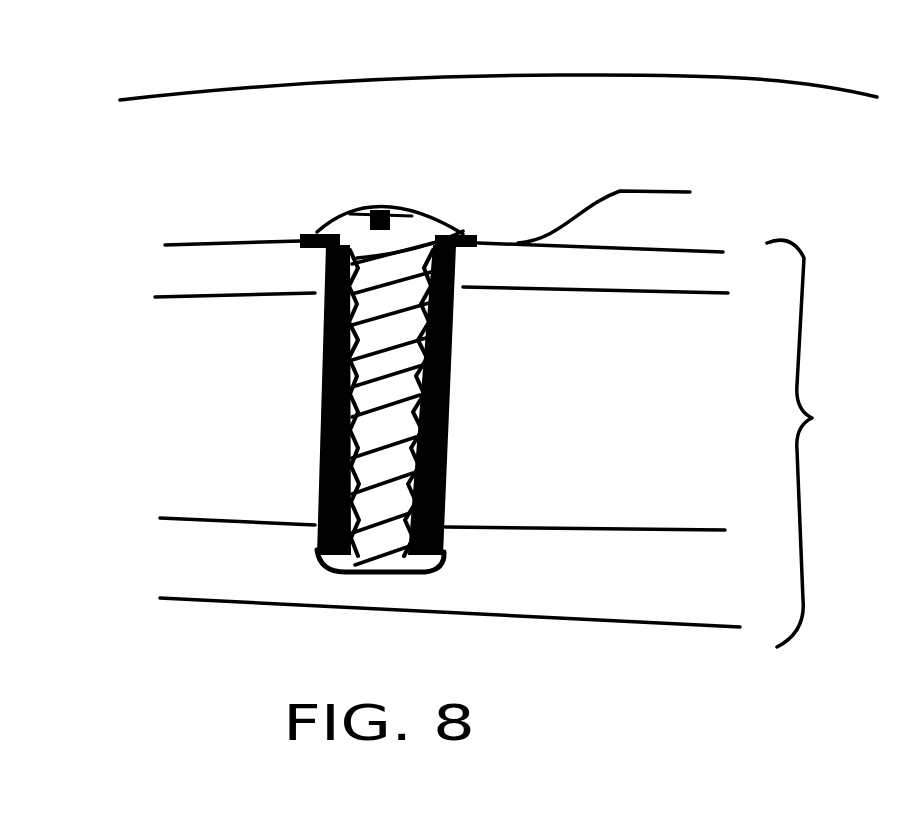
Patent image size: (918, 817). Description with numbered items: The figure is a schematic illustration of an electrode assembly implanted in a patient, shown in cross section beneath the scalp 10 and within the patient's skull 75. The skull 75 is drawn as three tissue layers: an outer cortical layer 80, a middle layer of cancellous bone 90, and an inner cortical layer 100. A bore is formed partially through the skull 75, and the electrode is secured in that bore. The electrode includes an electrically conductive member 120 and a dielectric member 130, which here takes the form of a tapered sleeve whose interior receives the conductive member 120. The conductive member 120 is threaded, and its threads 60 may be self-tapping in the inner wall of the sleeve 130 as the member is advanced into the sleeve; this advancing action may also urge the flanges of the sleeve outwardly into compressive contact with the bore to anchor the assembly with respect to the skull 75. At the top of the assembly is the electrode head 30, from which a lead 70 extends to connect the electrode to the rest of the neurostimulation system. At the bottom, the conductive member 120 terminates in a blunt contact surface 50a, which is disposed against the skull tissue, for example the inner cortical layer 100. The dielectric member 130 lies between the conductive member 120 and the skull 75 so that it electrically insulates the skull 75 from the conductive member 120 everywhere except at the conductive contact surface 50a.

The scalp 10 is at (310, 132).
The electrode head 30 is at (415, 227).
The lead 70 is at (620, 187).
The outer cortical layer 80 is at (172, 270).
The cancellous bone 90 is at (183, 403).
The inner cortical layer 100 is at (183, 568).
The skull 75 is at (828, 443).
The dielectric member 130 is at (322, 356).
The threads 60 is at (446, 418).
The conductive member 120 is at (446, 476).
The contact surface 50a is at (392, 572).